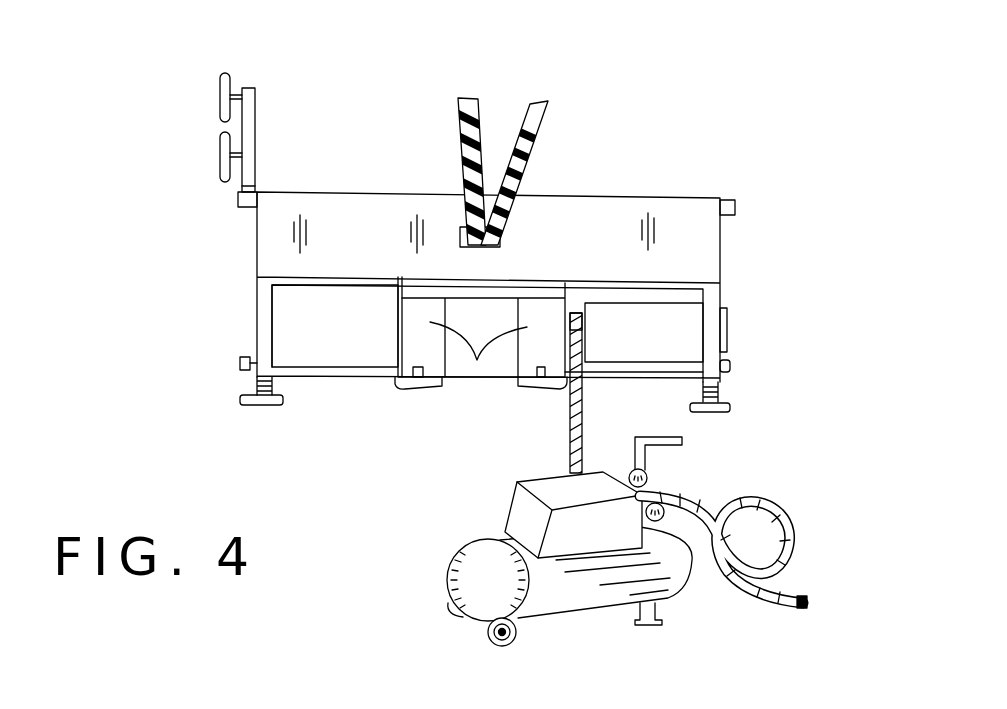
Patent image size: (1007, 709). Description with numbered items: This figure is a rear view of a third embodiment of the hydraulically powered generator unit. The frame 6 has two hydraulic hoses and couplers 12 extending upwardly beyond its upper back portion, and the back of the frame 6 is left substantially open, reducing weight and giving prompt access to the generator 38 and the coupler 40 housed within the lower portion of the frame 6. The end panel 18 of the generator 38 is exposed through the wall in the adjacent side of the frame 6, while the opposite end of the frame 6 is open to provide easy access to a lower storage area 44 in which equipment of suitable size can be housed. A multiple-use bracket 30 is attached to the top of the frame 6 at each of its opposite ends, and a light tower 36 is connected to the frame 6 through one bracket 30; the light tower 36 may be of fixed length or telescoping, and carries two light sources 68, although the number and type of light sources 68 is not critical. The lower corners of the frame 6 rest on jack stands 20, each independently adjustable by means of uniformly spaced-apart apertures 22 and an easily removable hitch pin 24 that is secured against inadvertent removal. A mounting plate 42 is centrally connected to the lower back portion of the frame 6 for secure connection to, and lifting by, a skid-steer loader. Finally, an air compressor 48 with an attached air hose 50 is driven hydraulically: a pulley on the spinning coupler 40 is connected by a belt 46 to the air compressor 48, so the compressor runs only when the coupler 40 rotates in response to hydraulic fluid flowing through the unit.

The frame 6 is at (685, 263).
The hydraulic hoses and couplers 12 is at (483, 180).
The end panel 18 is at (727, 322).
The jack stands 20 is at (268, 404).
The apertures 22 is at (257, 380).
The hitch pin 24 is at (240, 360).
The multiple-use bracket 30 is at (238, 198).
The light tower 36 is at (248, 125).
The generator 38 is at (653, 350).
The coupler 40 is at (568, 316).
The mounting plate 42 is at (477, 360).
The lower storage area 44 is at (337, 340).
The belt 46 is at (572, 430).
The air compressor 48 is at (470, 583).
The air hose 50 is at (780, 597).
The light sources 68 is at (225, 115).